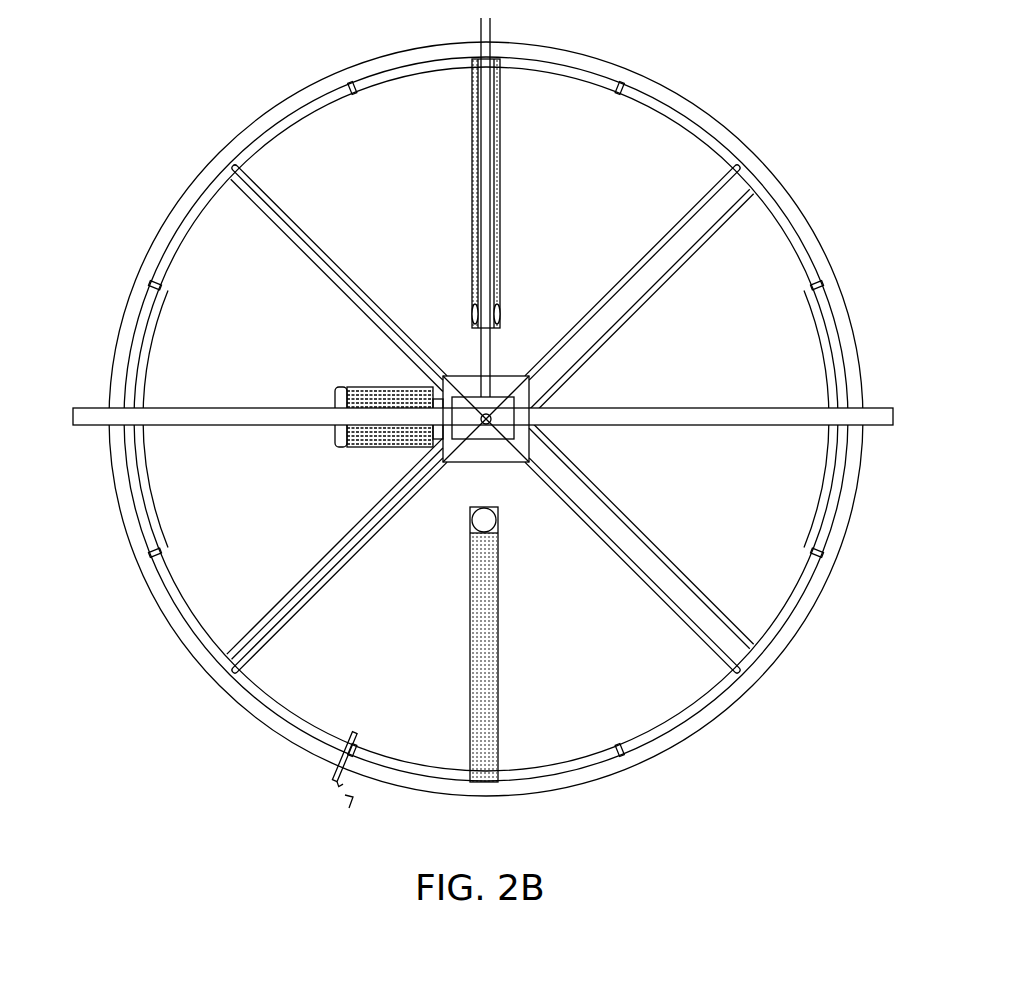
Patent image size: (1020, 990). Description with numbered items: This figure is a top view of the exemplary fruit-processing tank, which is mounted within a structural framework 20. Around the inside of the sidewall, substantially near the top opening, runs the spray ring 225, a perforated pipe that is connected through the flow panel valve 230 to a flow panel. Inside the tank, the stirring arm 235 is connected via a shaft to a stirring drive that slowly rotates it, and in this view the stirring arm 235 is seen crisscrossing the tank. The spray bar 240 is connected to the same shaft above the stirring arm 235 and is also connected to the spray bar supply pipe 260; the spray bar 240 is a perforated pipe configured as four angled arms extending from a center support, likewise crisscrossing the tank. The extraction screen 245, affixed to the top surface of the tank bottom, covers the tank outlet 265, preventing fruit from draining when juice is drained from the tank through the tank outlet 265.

The structural framework 20 is at (233, 426).
The spray ring 225 is at (276, 118).
The flow panel valve 230 is at (330, 773).
The stirring arm 235 is at (285, 622).
The spray bar 240 is at (712, 592).
The extraction screen 245 is at (500, 170).
The spray bar supply pipe 260 is at (493, 27).
The tank outlet 265 is at (496, 521).